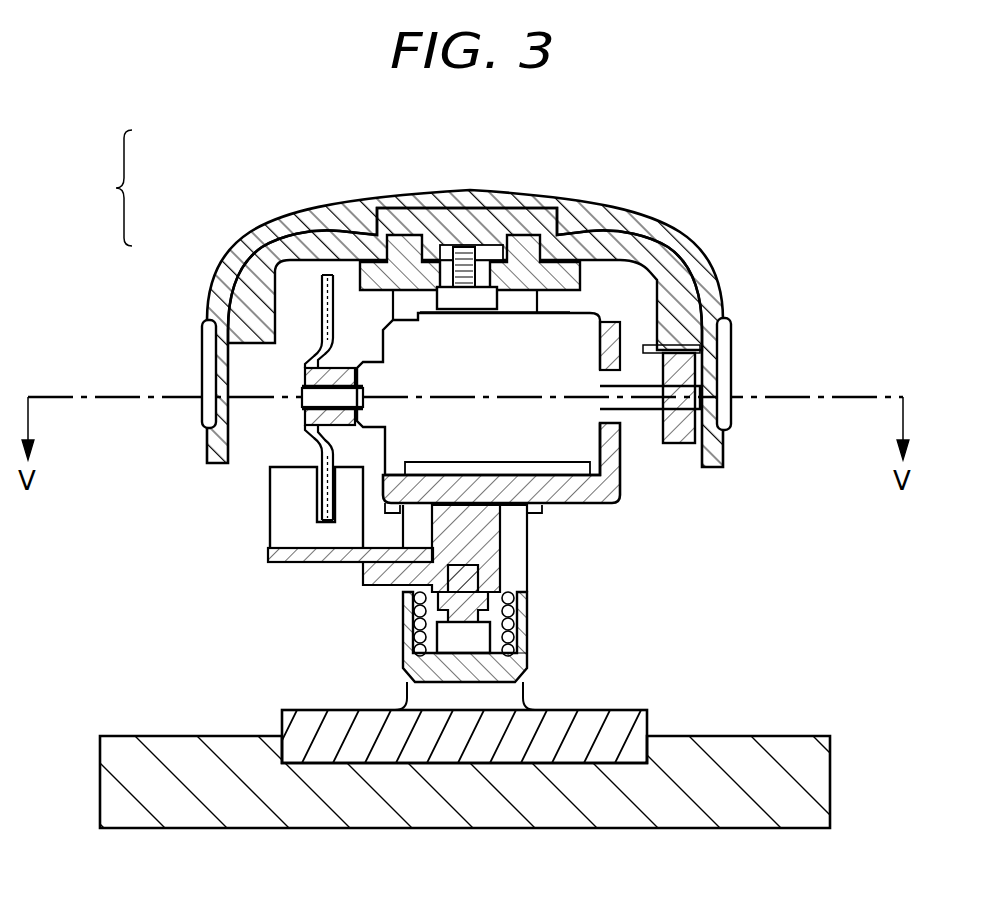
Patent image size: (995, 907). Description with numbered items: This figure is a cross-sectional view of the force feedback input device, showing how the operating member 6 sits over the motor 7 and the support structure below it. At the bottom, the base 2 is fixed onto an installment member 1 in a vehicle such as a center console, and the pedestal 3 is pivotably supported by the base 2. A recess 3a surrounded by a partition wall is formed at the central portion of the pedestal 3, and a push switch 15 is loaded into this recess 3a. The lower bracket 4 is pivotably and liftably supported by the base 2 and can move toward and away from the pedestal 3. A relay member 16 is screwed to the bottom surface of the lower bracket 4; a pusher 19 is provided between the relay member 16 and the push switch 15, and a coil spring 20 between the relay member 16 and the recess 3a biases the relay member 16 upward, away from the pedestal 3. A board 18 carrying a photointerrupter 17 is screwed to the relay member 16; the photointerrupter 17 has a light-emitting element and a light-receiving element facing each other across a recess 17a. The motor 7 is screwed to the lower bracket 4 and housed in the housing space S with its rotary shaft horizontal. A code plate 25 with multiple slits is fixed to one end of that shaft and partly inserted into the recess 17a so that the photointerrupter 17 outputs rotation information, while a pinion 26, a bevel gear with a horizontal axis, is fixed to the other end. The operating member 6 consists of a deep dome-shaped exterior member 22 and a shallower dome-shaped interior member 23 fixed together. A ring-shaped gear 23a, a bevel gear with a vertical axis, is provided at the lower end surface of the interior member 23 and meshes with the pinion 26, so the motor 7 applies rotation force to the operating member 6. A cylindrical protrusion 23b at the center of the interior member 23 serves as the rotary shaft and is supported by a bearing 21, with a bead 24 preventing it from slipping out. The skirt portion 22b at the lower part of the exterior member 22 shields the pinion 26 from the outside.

The installment member 1 is at (790, 745).
The base 2 is at (660, 710).
The pedestal 3 is at (466, 651).
The recess 3a is at (523, 640).
The lower bracket 4 is at (620, 500).
The operating member 6 is at (465, 303).
The motor 7 is at (585, 335).
The push switch 15 is at (455, 636).
The relay member 16 is at (487, 527).
The photointerrupter 17 is at (266, 507).
The recess 17a is at (318, 493).
The board 18 is at (268, 553).
The pusher 19 is at (480, 578).
The coil spring 20 is at (507, 612).
The bearing 21 is at (526, 302).
The exterior member 22 is at (485, 309).
The skirt portion 22b is at (723, 452).
The interior member 23 is at (462, 282).
The ring-shaped gear 23a is at (275, 357).
The cylindrical protrusion 23b is at (444, 258).
The bead 24 is at (467, 252).
The code plate 25 is at (325, 300).
The pinion 26 is at (703, 405).
The housing space S is at (557, 302).